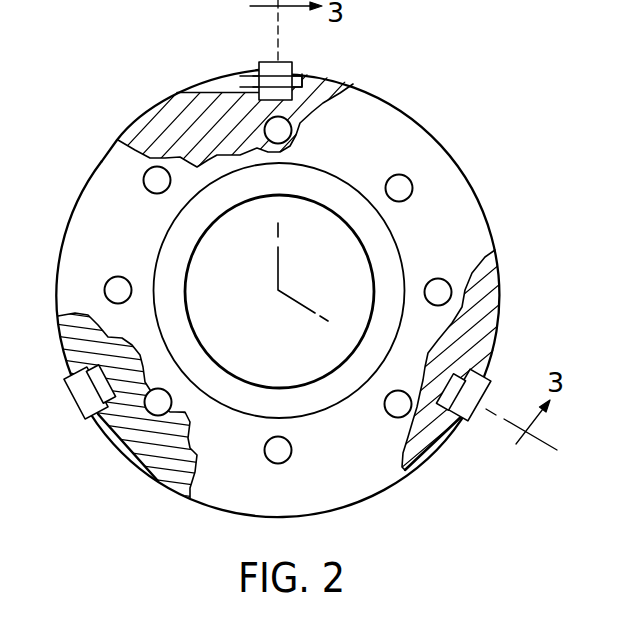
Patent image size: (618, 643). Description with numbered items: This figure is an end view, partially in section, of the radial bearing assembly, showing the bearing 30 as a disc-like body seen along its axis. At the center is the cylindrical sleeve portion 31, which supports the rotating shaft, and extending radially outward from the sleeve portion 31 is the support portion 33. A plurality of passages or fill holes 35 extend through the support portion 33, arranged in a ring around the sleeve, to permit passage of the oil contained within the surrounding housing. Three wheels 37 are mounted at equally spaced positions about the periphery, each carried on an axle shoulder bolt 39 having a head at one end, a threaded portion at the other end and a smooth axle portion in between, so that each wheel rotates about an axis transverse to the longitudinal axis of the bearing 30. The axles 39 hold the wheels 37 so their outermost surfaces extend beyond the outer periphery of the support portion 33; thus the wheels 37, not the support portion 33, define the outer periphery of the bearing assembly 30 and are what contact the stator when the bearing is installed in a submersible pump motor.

The bearing 30 is at (474, 144).
The cylindrical sleeve portion 31 is at (374, 271).
The support portion 33 is at (462, 225).
The fill holes 35 is at (443, 290).
The wheels 37 is at (268, 61).
The axle shoulder bolt 39 is at (254, 80).